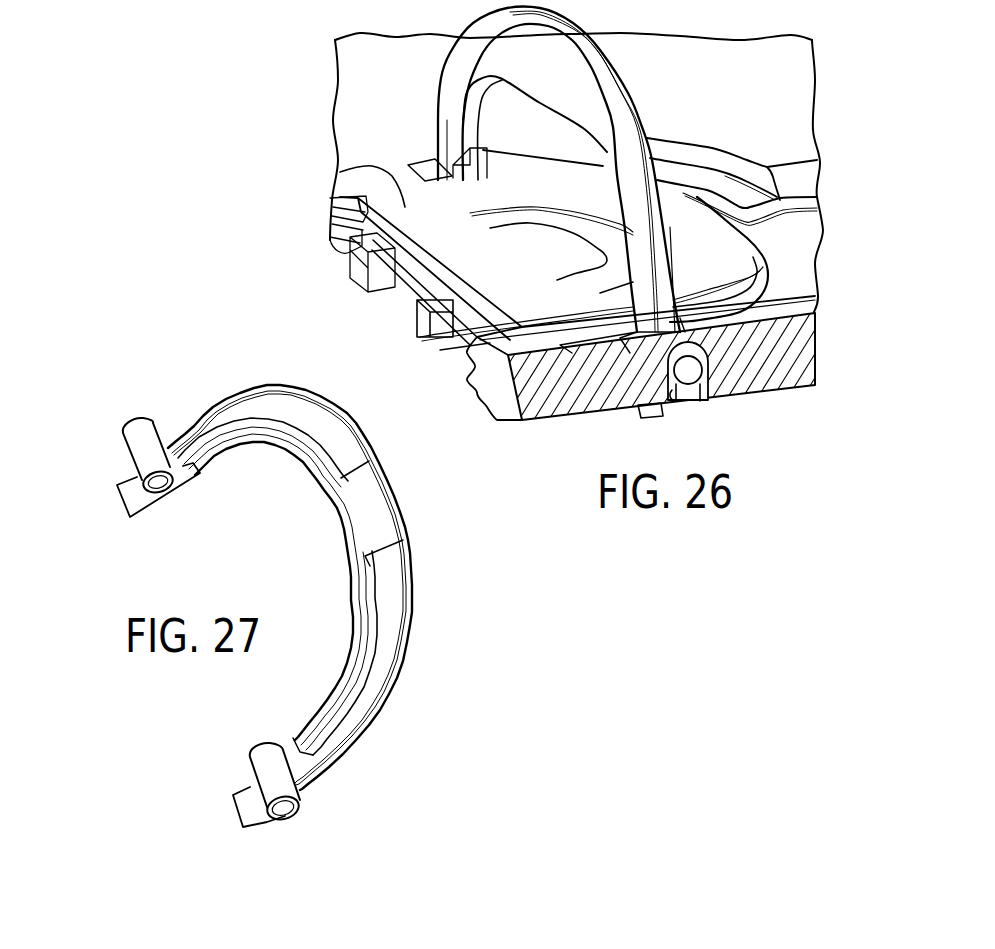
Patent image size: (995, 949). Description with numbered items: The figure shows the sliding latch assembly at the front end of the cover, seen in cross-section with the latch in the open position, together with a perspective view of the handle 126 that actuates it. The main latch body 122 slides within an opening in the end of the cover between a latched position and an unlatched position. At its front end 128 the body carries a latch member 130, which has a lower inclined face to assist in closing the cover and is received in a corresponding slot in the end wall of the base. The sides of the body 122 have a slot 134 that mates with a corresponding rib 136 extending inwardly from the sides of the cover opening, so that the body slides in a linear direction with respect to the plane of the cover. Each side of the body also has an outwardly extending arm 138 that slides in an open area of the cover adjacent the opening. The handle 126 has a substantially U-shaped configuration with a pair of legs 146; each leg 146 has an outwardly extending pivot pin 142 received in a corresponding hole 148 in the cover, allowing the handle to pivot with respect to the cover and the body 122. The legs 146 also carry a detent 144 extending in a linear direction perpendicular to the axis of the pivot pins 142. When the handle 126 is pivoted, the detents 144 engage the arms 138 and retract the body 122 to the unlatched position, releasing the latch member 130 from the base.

In FIG. 26, the main latch body 122 is at (403, 206).
In FIG. 26, the handle 126 is at (600, 176).
In FIG. 27, the handle 126 is at (275, 610).
In FIG. 26, the front end 128 is at (353, 280).
In FIG. 26, the latch member 130 is at (410, 293).
In FIG. 26, the slot 134 is at (342, 247).
In FIG. 26, the rib 136 is at (467, 363).
In FIG. 26, the arm 138 is at (690, 377).
In FIG. 26, the pivot pin 142 is at (690, 387).
In FIG. 27, the pivot pin 142 is at (120, 428).
In FIG. 26, the detent 144 is at (657, 417).
In FIG. 27, the detent 144 is at (123, 497).
In FIG. 26, the leg 146 is at (622, 262).
In FIG. 27, the leg 146 is at (207, 412).
In FIG. 26, the hole 148 is at (667, 397).